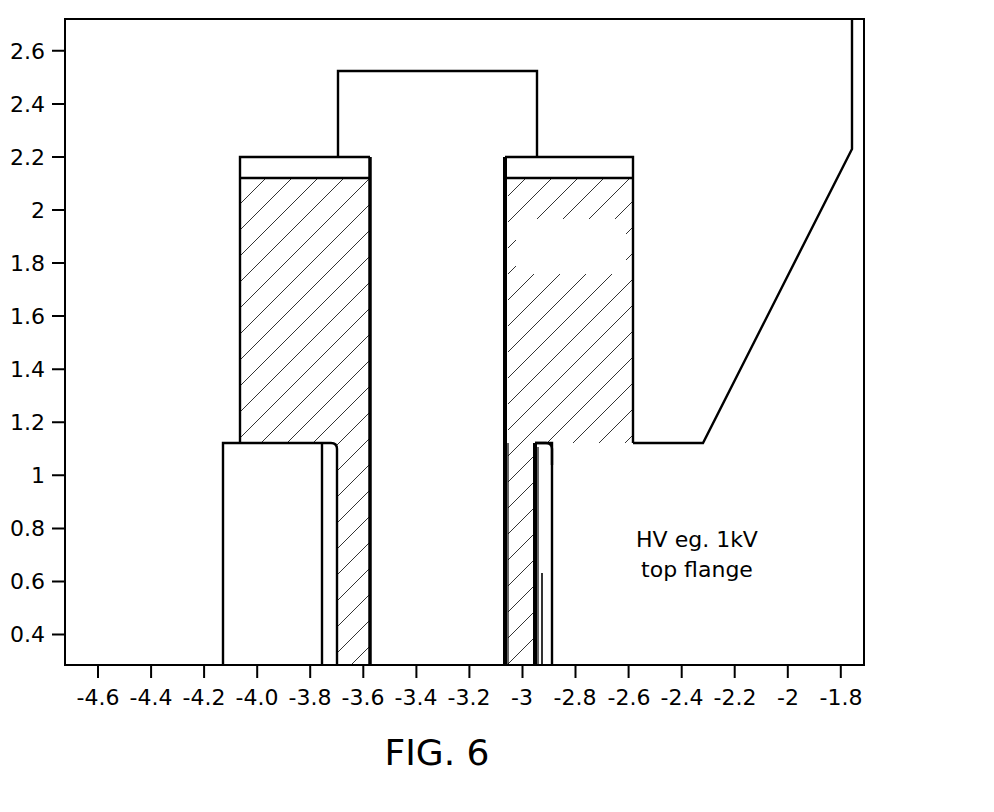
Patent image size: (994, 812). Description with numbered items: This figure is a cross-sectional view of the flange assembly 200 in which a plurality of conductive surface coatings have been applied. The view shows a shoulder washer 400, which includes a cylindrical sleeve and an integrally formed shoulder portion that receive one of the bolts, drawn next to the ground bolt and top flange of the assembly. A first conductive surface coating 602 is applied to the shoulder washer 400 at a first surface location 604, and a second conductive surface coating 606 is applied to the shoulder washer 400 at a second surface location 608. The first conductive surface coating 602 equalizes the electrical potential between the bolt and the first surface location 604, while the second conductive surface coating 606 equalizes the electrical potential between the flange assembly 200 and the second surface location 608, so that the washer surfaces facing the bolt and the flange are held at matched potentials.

The flange assembly 200 is at (162, 130).
The shoulder washer 400 is at (240, 222).
The first conductive surface coating 602 is at (503, 548).
The first surface location 604 is at (503, 603).
The second conductive surface coating 606 is at (537, 441).
The second surface location 608 is at (553, 455).